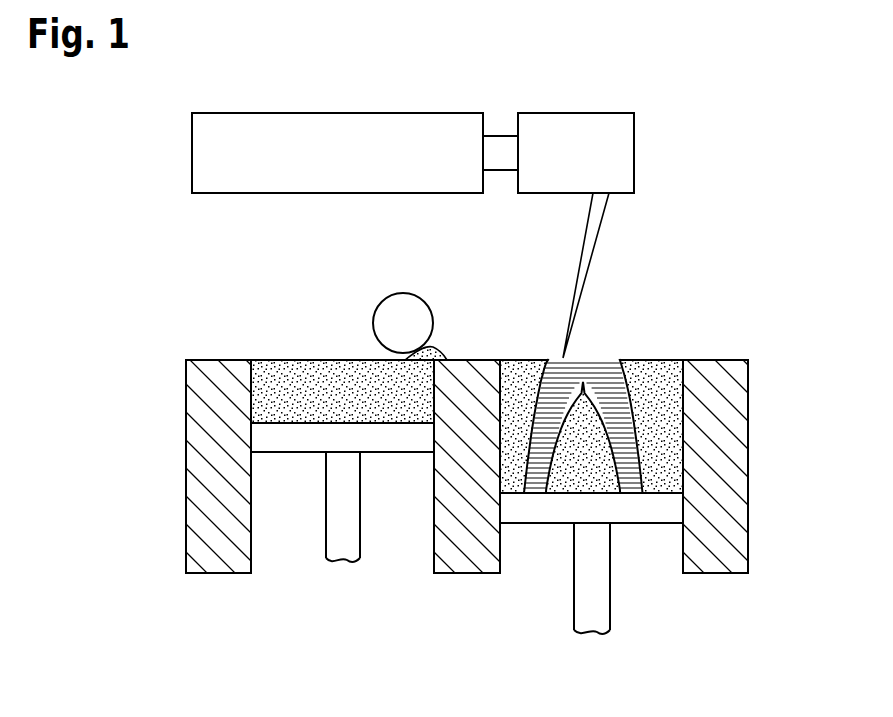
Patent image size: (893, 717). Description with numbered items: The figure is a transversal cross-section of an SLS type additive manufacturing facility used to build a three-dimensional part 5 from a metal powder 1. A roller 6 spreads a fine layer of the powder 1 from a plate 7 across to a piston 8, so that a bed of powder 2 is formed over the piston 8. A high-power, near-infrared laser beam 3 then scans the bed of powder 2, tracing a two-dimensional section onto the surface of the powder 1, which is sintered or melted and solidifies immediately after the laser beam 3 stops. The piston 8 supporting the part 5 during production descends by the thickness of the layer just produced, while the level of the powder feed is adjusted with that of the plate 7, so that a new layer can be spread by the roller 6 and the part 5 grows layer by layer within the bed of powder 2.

The metal powder 1 is at (530, 350).
The bed of powder 2 is at (668, 345).
The near-infrared laser beam 3 is at (595, 223).
The 3D part 5 is at (588, 370).
The roller 6 is at (387, 318).
The plate 7 is at (286, 437).
The piston 8 is at (536, 510).